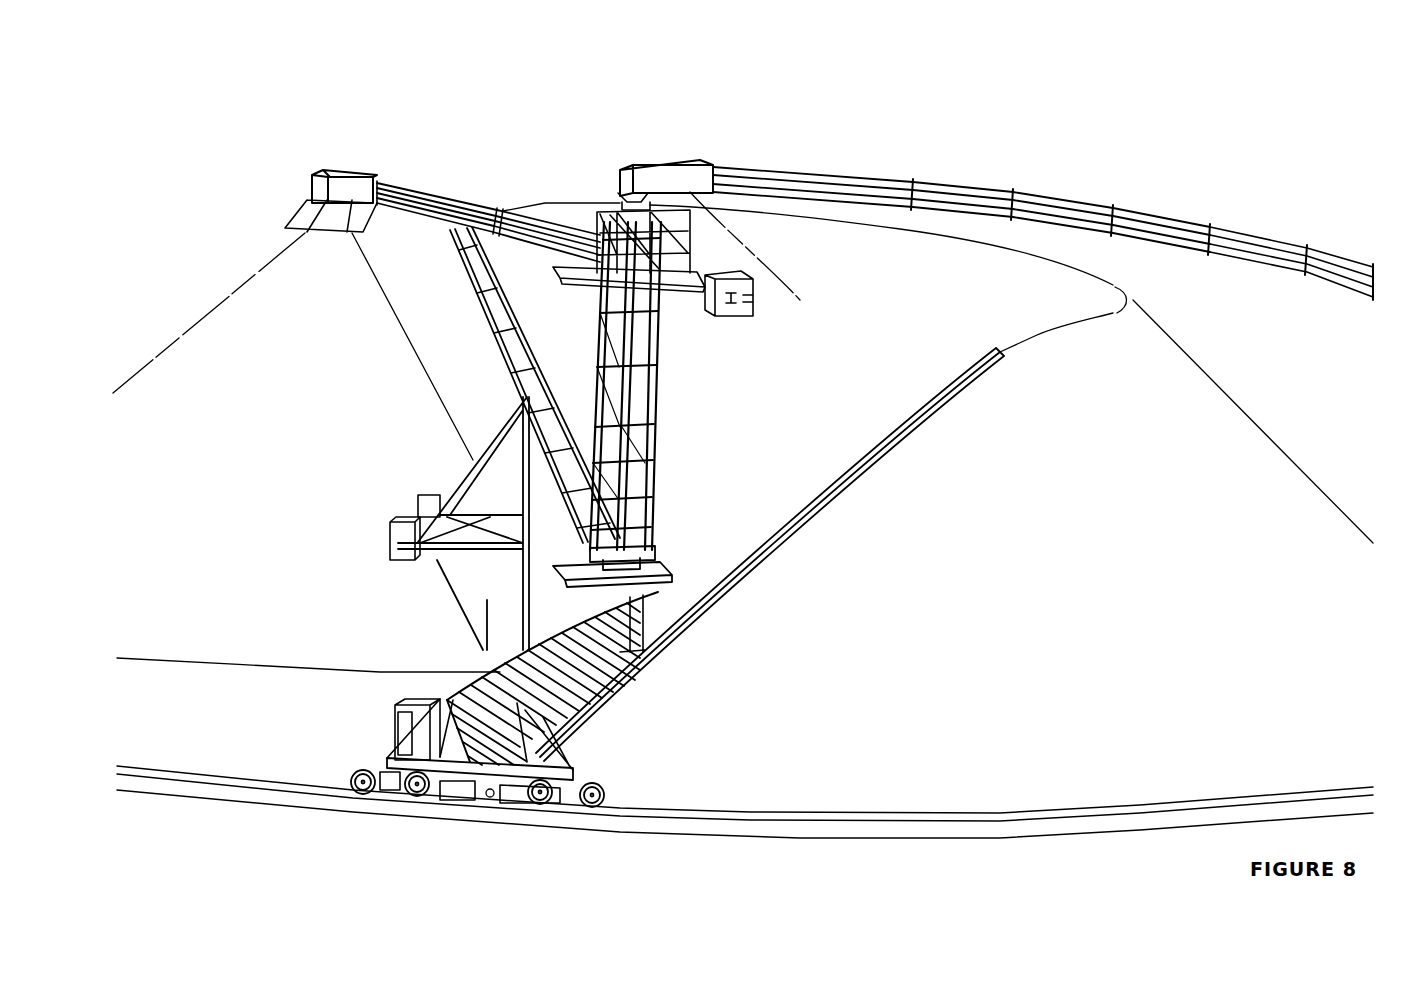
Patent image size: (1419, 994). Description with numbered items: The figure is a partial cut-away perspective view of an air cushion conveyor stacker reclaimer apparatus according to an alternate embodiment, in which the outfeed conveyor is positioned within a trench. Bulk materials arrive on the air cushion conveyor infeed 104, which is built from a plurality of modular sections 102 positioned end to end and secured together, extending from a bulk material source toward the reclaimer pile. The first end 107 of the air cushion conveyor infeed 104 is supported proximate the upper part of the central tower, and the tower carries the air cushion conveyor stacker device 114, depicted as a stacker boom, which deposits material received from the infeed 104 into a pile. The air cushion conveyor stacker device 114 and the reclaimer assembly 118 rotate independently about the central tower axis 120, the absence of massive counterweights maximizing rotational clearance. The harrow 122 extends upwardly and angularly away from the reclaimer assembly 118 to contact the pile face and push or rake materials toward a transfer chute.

The modular sections 102 is at (392, 181).
The air cushion conveyor stacker device 114 is at (480, 131).
The central tower axis 120 is at (636, 163).
The air cushion conveyor infeed 104 is at (953, 197).
The first end 107 is at (800, 300).
The harrow 122 is at (813, 507).
The reclaimer assembly 118 is at (605, 717).